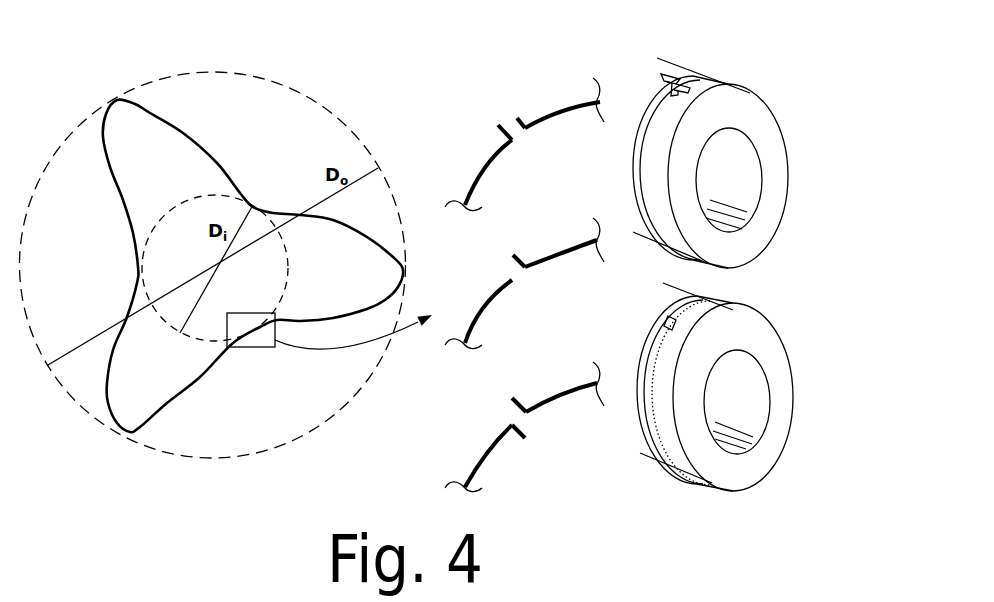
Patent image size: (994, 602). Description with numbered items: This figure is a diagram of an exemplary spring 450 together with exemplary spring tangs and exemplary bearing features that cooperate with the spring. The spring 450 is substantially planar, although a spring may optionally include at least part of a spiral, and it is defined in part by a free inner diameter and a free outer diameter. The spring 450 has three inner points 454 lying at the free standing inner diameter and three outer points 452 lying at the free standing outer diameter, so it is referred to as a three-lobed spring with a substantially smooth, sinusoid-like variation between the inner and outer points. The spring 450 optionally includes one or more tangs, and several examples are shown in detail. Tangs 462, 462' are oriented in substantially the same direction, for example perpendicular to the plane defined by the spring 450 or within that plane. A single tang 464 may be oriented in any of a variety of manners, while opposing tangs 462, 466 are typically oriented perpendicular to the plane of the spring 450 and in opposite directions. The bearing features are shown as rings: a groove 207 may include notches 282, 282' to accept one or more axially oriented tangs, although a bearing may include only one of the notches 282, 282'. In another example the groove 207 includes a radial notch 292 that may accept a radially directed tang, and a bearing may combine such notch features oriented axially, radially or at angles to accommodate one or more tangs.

The groove 207 is at (685, 72).
The notch 282 is at (628, 68).
The notch 282' is at (728, 76).
The radial notch 292 is at (672, 320).
The spring 450 is at (137, 205).
The outer point 452 is at (118, 103).
The inner point 454 is at (138, 265).
The tang 462 is at (478, 246).
The tang 462' is at (467, 123).
The single tang 464 is at (513, 255).
The tang 466 is at (520, 435).